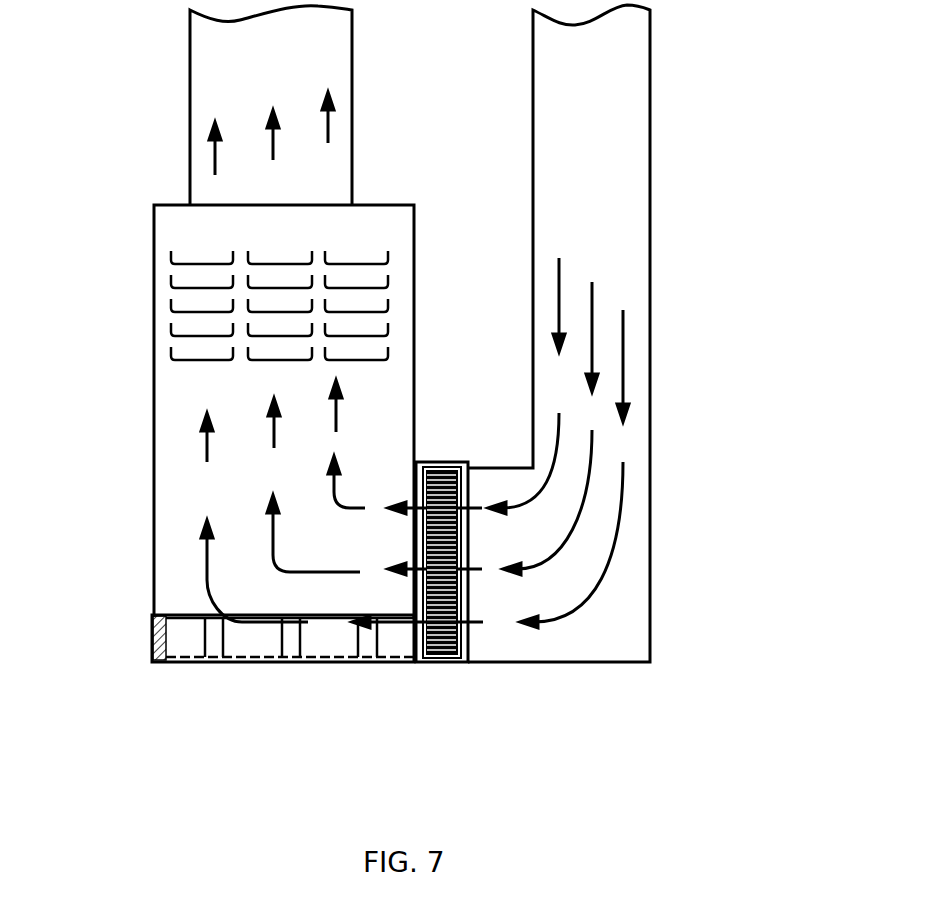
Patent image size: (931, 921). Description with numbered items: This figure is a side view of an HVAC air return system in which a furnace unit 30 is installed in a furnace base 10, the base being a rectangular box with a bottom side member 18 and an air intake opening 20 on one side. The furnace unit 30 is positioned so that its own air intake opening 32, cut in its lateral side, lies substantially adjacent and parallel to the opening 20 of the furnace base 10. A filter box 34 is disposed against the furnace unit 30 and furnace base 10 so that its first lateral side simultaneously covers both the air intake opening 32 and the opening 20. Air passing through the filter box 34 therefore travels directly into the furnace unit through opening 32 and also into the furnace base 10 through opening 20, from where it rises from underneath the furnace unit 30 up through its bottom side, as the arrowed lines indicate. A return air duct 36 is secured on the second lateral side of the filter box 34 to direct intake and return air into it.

The furnace base 10 is at (128, 638).
The bottom side member 18 is at (287, 664).
The opening 20 is at (407, 637).
The furnace unit 30 is at (188, 393).
The air intake opening 32 is at (412, 535).
The filter box 34 is at (443, 462).
The return air duct 36 is at (652, 457).